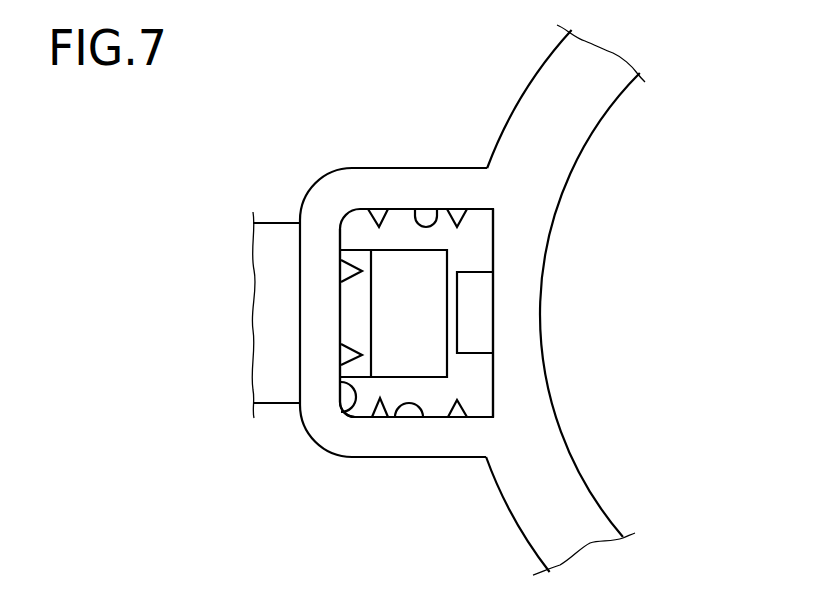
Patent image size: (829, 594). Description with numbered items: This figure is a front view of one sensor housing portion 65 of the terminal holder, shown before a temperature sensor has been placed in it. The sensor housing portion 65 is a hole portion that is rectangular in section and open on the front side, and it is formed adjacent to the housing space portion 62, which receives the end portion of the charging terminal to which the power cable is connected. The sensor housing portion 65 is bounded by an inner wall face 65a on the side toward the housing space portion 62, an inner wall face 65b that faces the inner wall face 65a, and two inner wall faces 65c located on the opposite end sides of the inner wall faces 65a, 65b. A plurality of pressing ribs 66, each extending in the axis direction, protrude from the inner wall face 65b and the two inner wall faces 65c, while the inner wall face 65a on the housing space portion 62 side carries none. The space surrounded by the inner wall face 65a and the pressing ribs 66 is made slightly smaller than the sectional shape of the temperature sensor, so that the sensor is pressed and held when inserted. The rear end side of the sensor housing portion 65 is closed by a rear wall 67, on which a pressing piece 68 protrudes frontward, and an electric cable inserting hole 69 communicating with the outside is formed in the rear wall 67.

The housing space portion 62 is at (625, 457).
The sensor housing portion 65 is at (405, 217).
The inner wall face 65a is at (493, 392).
The inner wall face 65b is at (352, 404).
The inner wall faces 65c is at (433, 215).
The pressing ribs 66 is at (380, 213).
The rear wall 67 is at (479, 238).
The pressing piece 68 is at (481, 303).
The electric cable inserting hole 69 is at (433, 360).